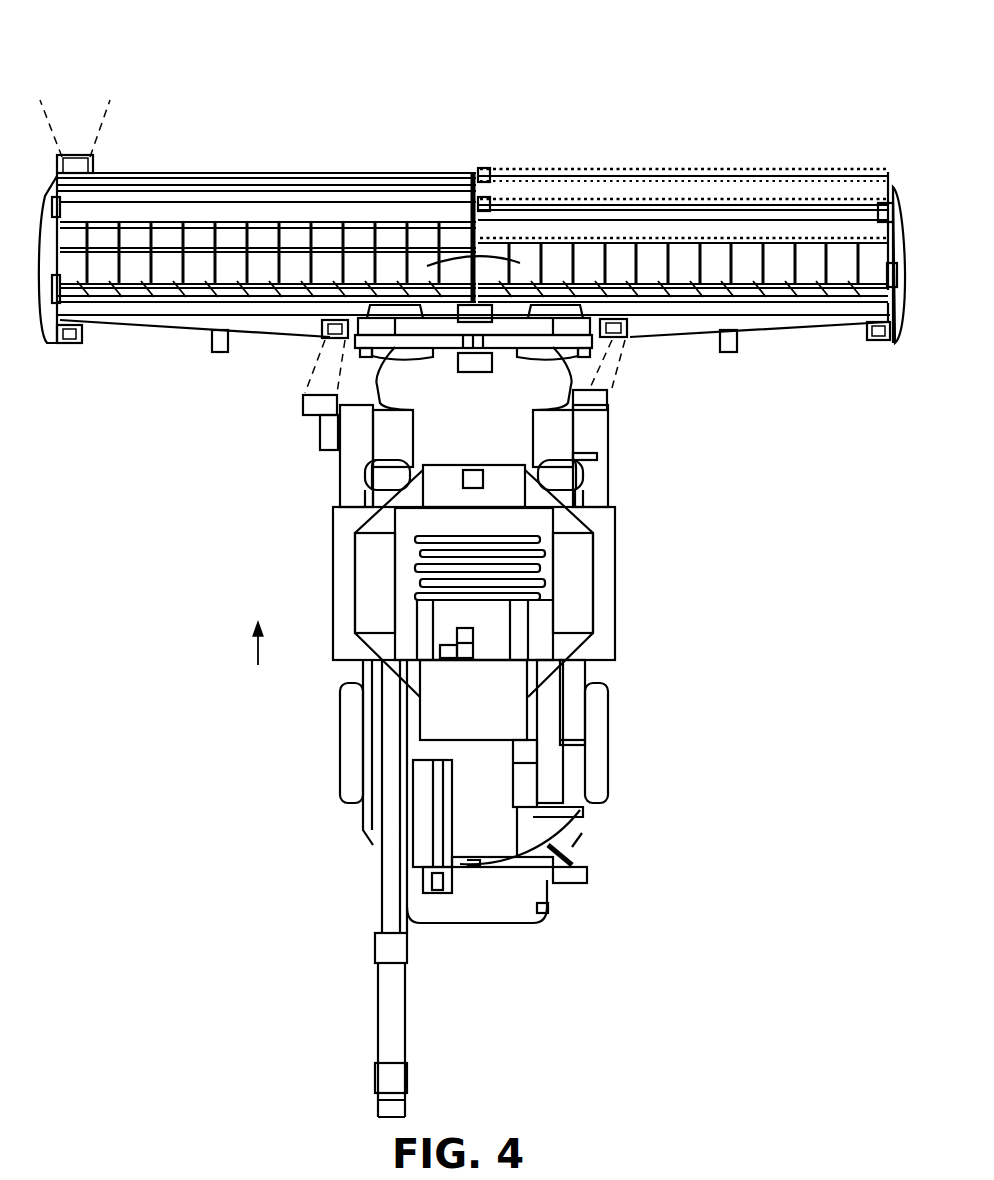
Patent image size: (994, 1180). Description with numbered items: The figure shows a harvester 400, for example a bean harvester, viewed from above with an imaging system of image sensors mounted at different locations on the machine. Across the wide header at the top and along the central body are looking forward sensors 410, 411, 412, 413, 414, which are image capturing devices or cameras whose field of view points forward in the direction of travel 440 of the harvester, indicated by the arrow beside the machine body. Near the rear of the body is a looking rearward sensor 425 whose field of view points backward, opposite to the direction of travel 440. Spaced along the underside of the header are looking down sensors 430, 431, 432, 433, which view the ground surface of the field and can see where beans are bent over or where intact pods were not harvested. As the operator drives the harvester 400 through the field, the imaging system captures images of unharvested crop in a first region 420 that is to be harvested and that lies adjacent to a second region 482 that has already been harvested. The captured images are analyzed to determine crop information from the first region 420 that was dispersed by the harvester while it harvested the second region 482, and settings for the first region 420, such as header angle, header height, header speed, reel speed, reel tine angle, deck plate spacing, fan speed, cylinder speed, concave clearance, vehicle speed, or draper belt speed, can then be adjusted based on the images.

The harvester 400 is at (133, 82).
The looking forward sensor 410 is at (68, 157).
The looking forward sensor 411 is at (477, 303).
The looking forward sensor 412 is at (472, 372).
The looking forward sensor 413 is at (322, 420).
The looking forward sensor 414 is at (607, 400).
The first region 420 is at (290, 77).
The looking rearward sensor 425 is at (575, 883).
The looking down sensor 430 is at (70, 343).
The looking down sensor 431 is at (335, 338).
The looking down sensor 432 is at (612, 337).
The looking down sensor 433 is at (878, 340).
The direction of travel 440 is at (231, 643).
The second region 482 is at (738, 61).